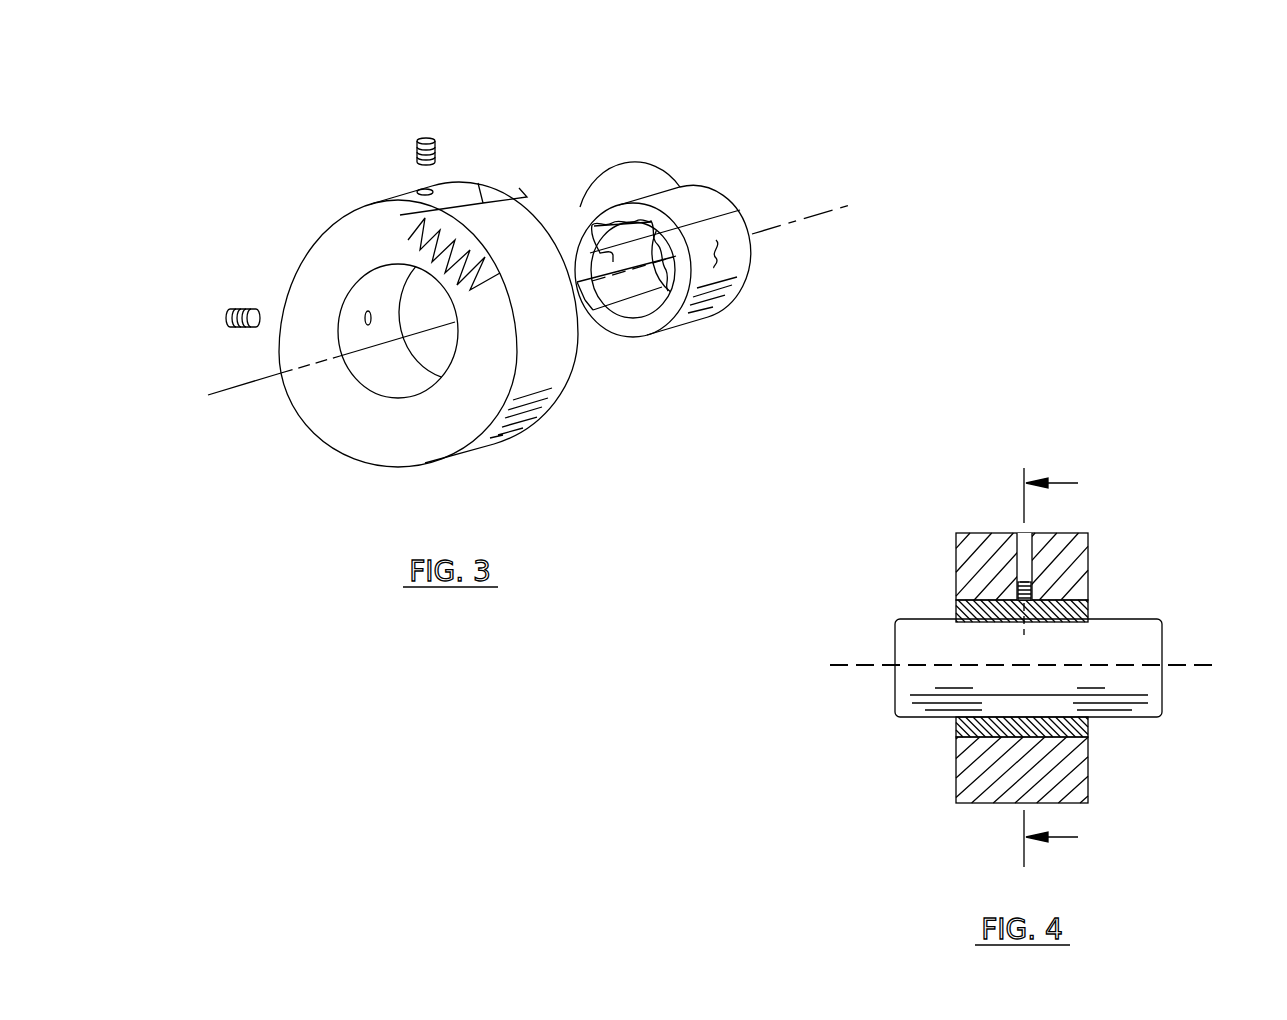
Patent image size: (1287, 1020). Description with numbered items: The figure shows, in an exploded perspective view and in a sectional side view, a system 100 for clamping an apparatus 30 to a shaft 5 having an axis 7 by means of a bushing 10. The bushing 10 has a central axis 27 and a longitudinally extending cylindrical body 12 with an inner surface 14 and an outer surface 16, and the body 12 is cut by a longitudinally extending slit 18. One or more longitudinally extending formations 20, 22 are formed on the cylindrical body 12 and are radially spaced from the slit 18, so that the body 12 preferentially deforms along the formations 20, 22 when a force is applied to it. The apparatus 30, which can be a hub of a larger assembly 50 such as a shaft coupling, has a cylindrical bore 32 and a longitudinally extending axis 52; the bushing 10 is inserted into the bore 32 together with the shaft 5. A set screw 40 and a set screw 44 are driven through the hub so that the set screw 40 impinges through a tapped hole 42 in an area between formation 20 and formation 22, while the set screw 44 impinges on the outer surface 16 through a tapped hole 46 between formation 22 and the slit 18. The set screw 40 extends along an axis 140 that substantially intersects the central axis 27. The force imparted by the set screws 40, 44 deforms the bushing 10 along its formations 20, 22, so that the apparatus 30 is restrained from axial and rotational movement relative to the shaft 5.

In FIG. 4, the shaft 5 is at (1190, 628).
In FIG. 4, the axis 7 is at (867, 667).
In FIG. 3, the bushing 10 is at (693, 227).
In FIG. 4, the bushing 10 is at (960, 610).
In FIG. 3, the longitudinally extending cylindrical body 12 is at (722, 193).
In FIG. 3, the inner surface 14 is at (577, 280).
In FIG. 3, the outer surface 16 is at (723, 253).
In FIG. 3, the longitudinally extending slit 18 is at (596, 304).
In FIG. 3, the longitudinally extending formation 20 is at (742, 211).
In FIG. 3, the longitudinally extending formation 22 is at (595, 226).
In FIG. 3, the central axis 27 is at (634, 268).
In FIG. 4, the central axis 27 is at (990, 693).
In FIG. 3, the apparatus 30 is at (427, 433).
In FIG. 4, the apparatus 30 is at (1065, 585).
In FIG. 3, the bore 32 is at (393, 374).
In FIG. 3, the set screw 40 is at (430, 128).
In FIG. 4, the set screw 40 is at (1030, 562).
In FIG. 3, the tapped hole 42 is at (422, 189).
In FIG. 4, the tapped hole 42 is at (1022, 530).
In FIG. 3, the set screw 44 is at (226, 317).
In FIG. 3, the tapped hole 46 is at (364, 316).
In FIG. 3, the larger assembly 50 is at (480, 183).
In FIG. 3, the longitudinally extending axis 52 is at (529, 325).
In FIG. 4, the longitudinally extending axis 52 is at (1012, 693).
In FIG. 3, the system 100 is at (628, 122).
In FIG. 4, the system 100 is at (1180, 483).
In FIG. 4, the axis 140 is at (1035, 580).